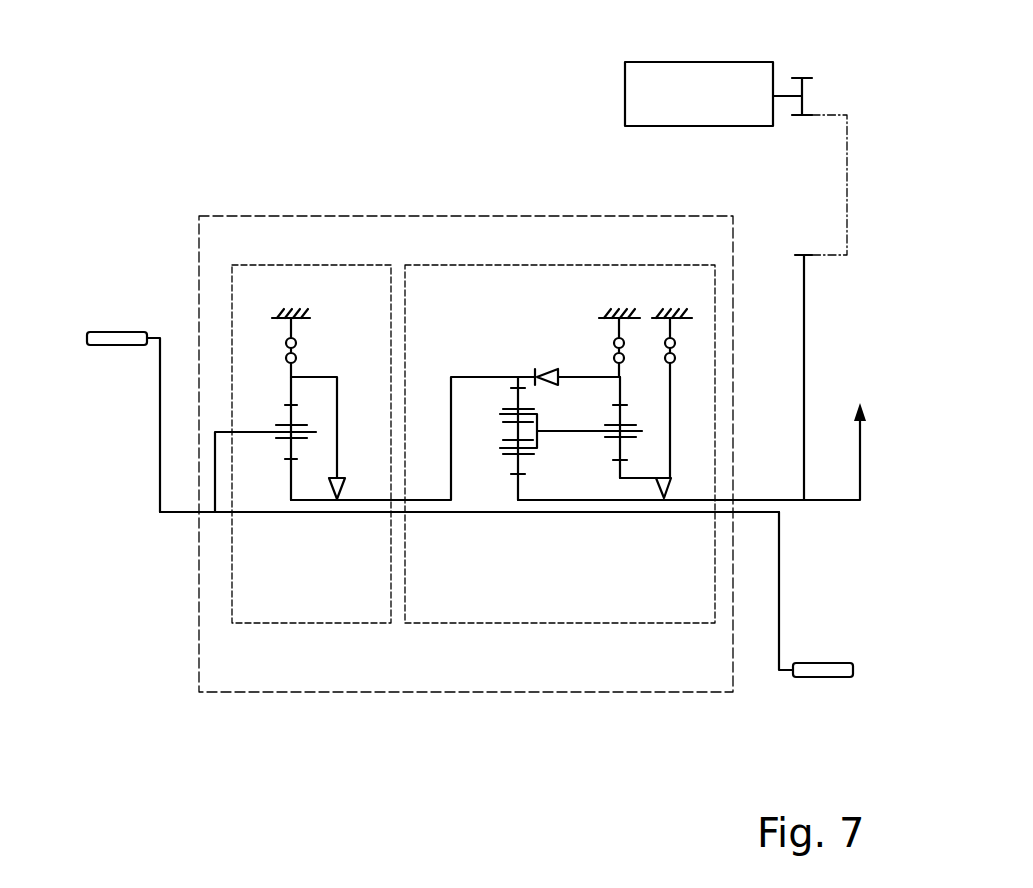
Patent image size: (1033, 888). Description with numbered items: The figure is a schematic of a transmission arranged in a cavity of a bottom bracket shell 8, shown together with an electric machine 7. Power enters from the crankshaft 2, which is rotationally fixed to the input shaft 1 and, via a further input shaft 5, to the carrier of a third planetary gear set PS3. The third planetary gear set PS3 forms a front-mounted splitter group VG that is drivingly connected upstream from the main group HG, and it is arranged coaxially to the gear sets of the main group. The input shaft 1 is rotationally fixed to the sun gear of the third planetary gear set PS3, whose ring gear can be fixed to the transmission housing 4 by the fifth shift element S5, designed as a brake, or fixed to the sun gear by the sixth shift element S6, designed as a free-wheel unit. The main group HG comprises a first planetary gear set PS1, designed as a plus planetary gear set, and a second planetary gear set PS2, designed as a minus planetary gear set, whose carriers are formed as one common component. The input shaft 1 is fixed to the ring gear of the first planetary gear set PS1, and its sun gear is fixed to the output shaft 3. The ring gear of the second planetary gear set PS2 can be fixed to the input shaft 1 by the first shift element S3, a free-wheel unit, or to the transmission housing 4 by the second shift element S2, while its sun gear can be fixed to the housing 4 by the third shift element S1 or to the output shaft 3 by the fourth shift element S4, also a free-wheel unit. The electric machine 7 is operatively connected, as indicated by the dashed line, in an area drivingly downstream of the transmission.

The input shaft 1 is at (425, 514).
The crankshaft 2 is at (757, 514).
The output shaft 3 is at (553, 514).
The transmission housing 4 is at (290, 304).
The further input shaft 5 is at (250, 432).
The electric machine 7 is at (662, 76).
The bottom bracket shell 8 is at (397, 215).
The front-mounted splitter group VG is at (335, 262).
The main group HG is at (463, 263).
The first planetary gear set PS1 is at (518, 522).
The second planetary gear set PS2 is at (621, 522).
The third planetary gear set PS3 is at (291, 522).
The third shift element S1 is at (684, 350).
The second shift element S2 is at (610, 345).
The first shift element S3 is at (543, 370).
The fourth shift element S4 is at (680, 484).
The fifth shift element S5 is at (286, 346).
The sixth shift element S6 is at (326, 488).